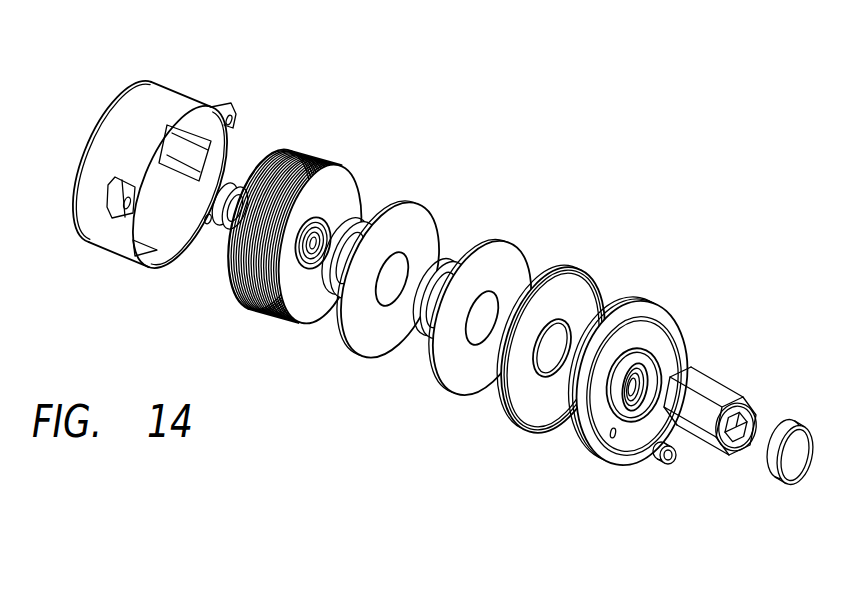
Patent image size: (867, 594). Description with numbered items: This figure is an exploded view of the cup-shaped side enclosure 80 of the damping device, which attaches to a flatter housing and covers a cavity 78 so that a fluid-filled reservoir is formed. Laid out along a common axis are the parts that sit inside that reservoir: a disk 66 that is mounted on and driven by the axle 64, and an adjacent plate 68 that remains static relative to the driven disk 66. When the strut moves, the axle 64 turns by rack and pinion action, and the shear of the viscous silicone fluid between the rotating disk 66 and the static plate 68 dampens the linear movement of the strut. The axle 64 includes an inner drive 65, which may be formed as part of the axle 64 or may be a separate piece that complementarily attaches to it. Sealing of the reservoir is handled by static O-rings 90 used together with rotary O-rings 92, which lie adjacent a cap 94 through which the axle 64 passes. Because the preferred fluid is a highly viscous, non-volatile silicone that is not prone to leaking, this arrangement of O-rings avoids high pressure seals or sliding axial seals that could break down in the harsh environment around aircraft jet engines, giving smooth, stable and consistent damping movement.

The axle 64 is at (737, 455).
The inner drive 65 is at (719, 415).
The disk 66 is at (422, 203).
The static plate 68 is at (512, 240).
The cavity 78 is at (173, 218).
The side enclosure 80 is at (187, 103).
The static O-ring 90 is at (554, 332).
The rotary O-ring 92 is at (540, 380).
The cap 94 is at (663, 305).